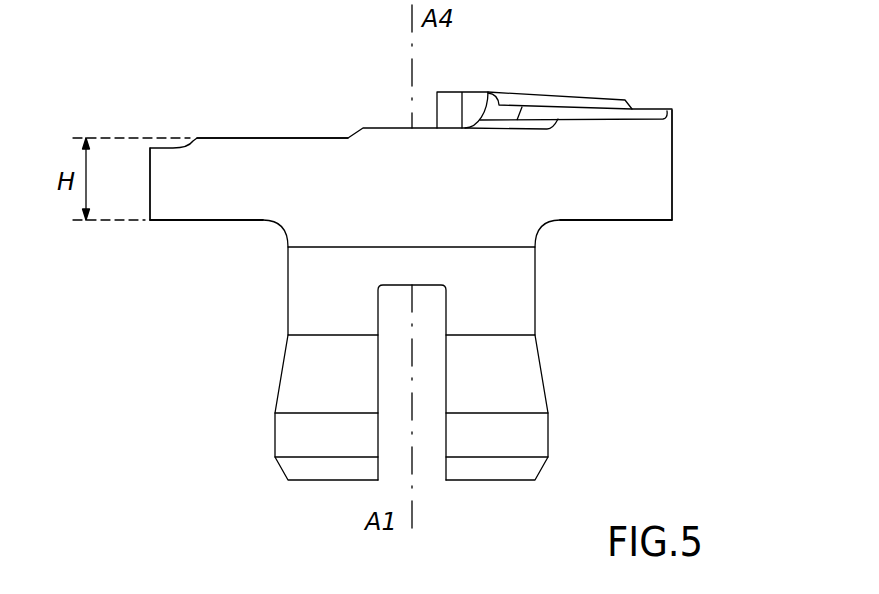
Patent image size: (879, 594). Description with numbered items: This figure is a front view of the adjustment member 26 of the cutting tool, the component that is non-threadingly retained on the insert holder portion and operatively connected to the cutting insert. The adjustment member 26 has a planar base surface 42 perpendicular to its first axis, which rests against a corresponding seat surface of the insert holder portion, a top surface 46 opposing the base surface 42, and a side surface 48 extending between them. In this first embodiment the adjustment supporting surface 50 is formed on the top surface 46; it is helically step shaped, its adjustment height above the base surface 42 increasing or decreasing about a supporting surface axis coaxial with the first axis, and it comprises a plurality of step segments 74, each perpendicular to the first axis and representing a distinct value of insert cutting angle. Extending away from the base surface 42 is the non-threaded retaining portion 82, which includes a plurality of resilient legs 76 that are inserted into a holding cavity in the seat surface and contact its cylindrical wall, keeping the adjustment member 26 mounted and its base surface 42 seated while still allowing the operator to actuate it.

The adjustment member 26 is at (130, 115).
The planar base surface 42 is at (623, 222).
The top surface 46 is at (488, 92).
The side surface 48 is at (643, 170).
The adjustment supporting surface 50 is at (582, 100).
The step segment 74 is at (270, 133).
The resilient legs 76 is at (297, 393).
The non-threaded retaining portion 82 is at (303, 292).